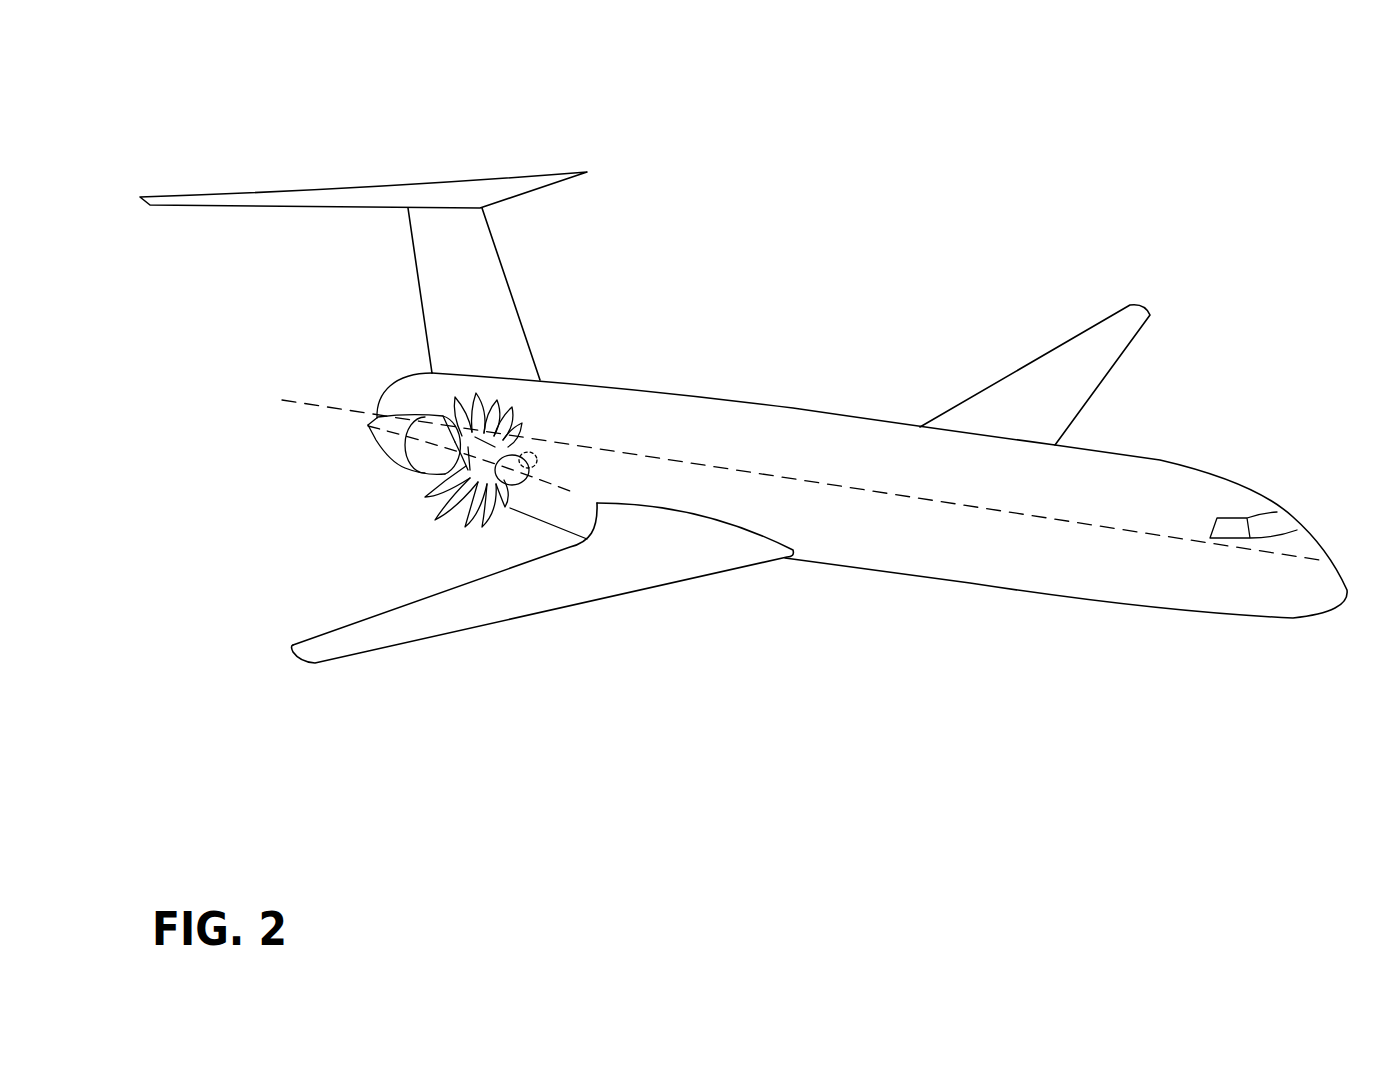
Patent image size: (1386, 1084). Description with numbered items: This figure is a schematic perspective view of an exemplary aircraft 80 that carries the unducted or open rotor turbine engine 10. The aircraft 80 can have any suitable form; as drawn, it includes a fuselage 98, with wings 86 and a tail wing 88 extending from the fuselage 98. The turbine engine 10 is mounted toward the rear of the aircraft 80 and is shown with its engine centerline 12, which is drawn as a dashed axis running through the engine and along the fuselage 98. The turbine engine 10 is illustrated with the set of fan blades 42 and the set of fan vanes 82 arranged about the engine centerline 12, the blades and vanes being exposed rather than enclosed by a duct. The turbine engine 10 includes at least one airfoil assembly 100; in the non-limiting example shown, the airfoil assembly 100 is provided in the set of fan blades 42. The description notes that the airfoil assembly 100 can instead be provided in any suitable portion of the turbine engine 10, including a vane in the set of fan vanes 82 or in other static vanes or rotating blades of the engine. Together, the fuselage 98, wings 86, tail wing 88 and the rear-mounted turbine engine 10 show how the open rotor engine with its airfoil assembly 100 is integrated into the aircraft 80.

The aircraft 80 is at (214, 104).
The tail wing 88 is at (353, 190).
The set of fan blades 42 is at (503, 422).
The fuselage 98 is at (795, 408).
The set of fan vanes 82 is at (458, 412).
The engine centerline 12 is at (327, 418).
The turbine engine 10 is at (402, 481).
The airfoil assembly 100 is at (455, 536).
The wings 86 is at (462, 632).